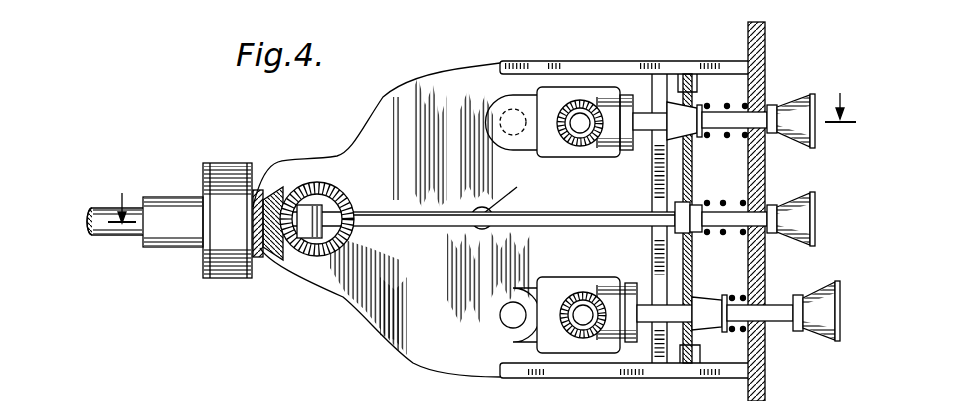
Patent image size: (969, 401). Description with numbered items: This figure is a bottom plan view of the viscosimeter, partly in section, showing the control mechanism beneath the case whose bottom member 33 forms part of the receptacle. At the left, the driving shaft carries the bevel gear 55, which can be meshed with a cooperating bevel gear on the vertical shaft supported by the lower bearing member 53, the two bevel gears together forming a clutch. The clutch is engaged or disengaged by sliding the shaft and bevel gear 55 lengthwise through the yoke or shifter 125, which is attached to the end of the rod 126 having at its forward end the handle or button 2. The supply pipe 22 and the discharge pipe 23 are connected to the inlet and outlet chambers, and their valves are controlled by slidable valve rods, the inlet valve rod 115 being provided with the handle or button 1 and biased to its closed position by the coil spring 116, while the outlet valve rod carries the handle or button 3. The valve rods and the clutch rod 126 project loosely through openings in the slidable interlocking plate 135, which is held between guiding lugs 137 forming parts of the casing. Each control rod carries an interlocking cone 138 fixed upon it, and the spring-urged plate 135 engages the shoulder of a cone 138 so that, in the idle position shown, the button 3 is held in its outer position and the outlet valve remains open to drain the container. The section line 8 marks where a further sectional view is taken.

The handle or button 1 is at (813, 100).
The handle or button 2 is at (812, 222).
The handle or button 3 is at (838, 311).
The section line 8- 8 is at (482, 177).
The supply pipe 22 is at (540, 165).
The discharge pipe 23 is at (590, 333).
The bottom member 33 is at (230, 243).
The lower bearing member 53 is at (345, 195).
The bevel gear 55 is at (271, 192).
The valve rod 115 is at (638, 113).
The coil spring 116 is at (728, 105).
The yoke or shifter 125 is at (311, 207).
The rod 126 is at (555, 212).
The slidable interlocking plate 135 is at (692, 172).
The guiding lugs 137 is at (690, 83).
The interlocking cone 138 is at (668, 137).